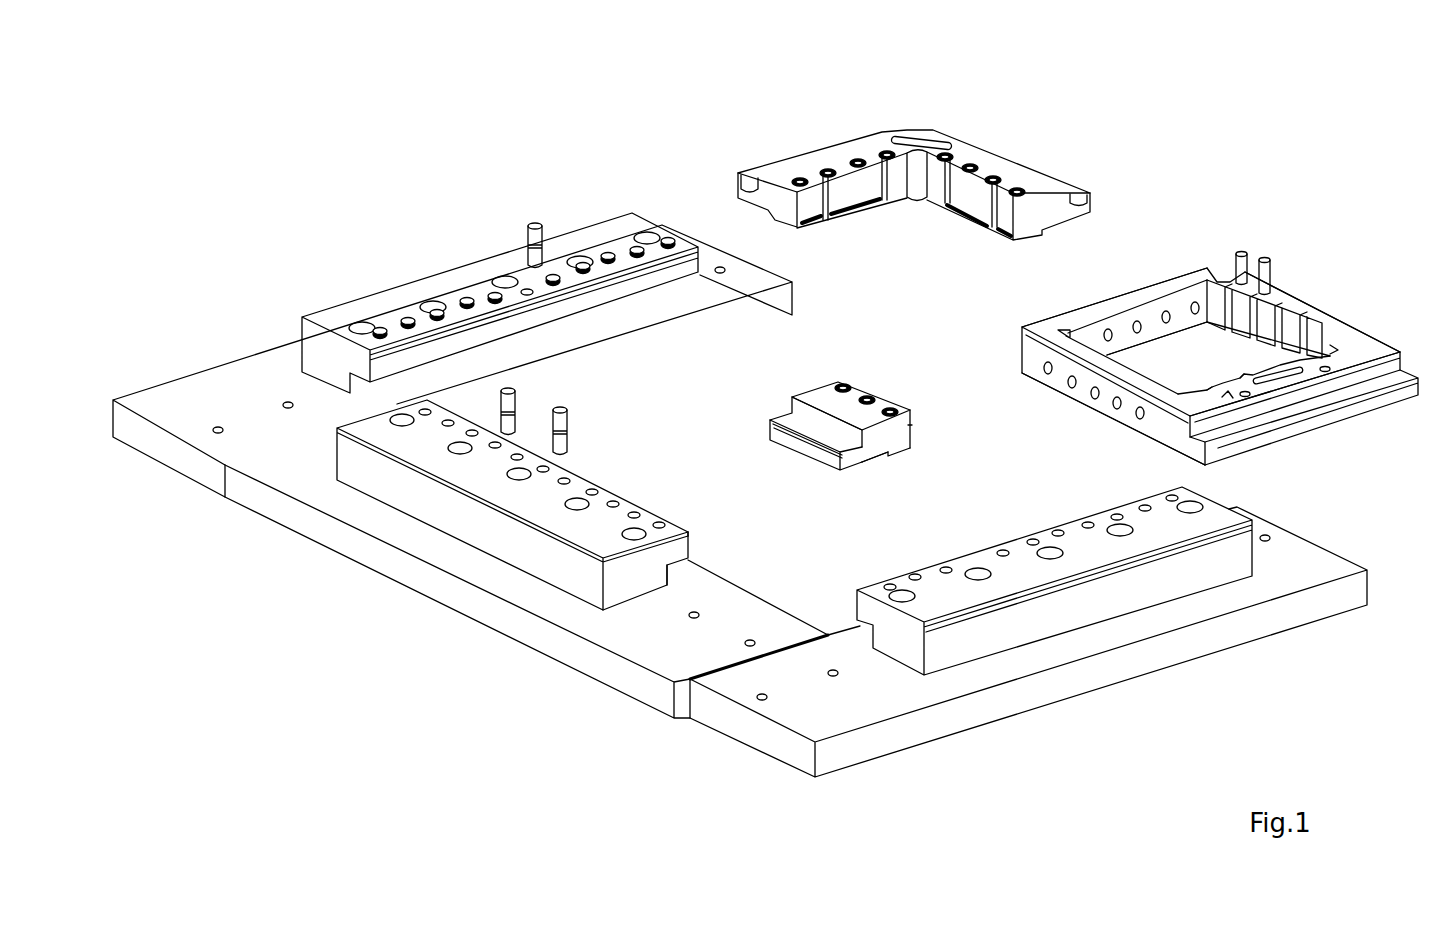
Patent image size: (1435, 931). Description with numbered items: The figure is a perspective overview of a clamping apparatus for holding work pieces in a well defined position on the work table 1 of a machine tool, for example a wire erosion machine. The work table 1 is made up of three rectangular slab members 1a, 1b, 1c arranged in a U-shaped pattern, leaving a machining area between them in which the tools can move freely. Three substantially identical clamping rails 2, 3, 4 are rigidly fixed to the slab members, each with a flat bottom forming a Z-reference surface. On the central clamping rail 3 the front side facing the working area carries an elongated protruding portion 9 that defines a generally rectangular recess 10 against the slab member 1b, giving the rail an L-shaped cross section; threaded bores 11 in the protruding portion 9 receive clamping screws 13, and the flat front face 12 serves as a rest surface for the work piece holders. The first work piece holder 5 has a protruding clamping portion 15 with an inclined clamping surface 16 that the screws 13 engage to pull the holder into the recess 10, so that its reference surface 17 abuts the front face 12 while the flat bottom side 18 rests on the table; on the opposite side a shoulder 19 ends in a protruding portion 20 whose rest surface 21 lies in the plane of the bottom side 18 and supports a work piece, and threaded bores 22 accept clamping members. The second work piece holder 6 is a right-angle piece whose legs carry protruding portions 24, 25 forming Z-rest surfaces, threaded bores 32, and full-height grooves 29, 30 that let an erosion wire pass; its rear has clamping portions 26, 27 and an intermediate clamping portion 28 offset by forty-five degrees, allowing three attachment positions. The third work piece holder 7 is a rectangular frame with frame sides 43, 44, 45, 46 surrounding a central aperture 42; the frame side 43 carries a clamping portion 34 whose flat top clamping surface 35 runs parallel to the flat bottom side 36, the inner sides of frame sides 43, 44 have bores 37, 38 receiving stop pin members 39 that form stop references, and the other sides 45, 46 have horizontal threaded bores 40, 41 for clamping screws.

The work table 1 is at (740, 519).
The slab member 1a is at (158, 446).
The slab member 1b is at (625, 686).
The slab member 1c is at (778, 743).
The clamping rail 2 is at (383, 301).
The clamping rail 3 is at (527, 510).
The clamping rail 4 is at (893, 650).
The first work piece holder 5 is at (838, 426).
The second work piece holder 6 is at (917, 147).
The third work piece holder 7 is at (1228, 352).
The protruding portion 9 is at (689, 546).
The recess 10 is at (683, 575).
The threaded bores 11 is at (470, 433).
The front face 12 is at (705, 536).
The screws 13 is at (558, 408).
The clamping portion 15 is at (782, 438).
The inclined clamping surface 16 is at (820, 428).
The reference surface 17 is at (795, 410).
The bottom side 18 is at (865, 472).
The shoulder 19 is at (900, 457).
The protruding portion 20 is at (917, 452).
The rest surface 21 is at (918, 428).
The threaded bores 22 is at (868, 396).
The protruding portion 24 is at (870, 214).
The protruding portion 25 is at (957, 222).
The clamping portion 26 is at (742, 187).
The clamping portion 27 is at (1082, 202).
The clamping portion 28 is at (925, 110).
The grooves 29 is at (861, 160).
The grooves 30 is at (993, 168).
The threaded bores 32 is at (800, 176).
The clamping portion 34 is at (1320, 418).
The edge of ledge 35 is at (1408, 360).
The bottom side 36 is at (1085, 412).
The bores 37 is at (1243, 383).
The bores 38 is at (1310, 325).
The stop pin members 39 is at (1266, 258).
The threaded bores 40 is at (1072, 388).
The threaded bores 41 is at (1167, 324).
The central aperture 42 is at (1193, 350).
The frame side 43 is at (1230, 399).
The frame side 44 is at (1326, 320).
The frame side 45 is at (1133, 297).
The frame side 46 is at (1140, 420).